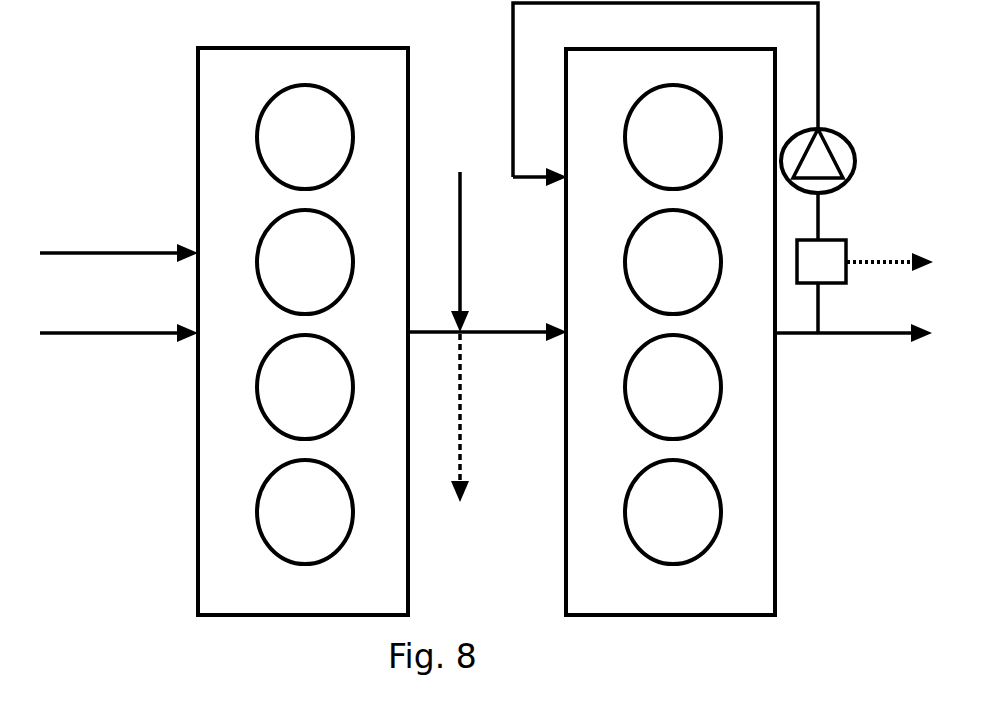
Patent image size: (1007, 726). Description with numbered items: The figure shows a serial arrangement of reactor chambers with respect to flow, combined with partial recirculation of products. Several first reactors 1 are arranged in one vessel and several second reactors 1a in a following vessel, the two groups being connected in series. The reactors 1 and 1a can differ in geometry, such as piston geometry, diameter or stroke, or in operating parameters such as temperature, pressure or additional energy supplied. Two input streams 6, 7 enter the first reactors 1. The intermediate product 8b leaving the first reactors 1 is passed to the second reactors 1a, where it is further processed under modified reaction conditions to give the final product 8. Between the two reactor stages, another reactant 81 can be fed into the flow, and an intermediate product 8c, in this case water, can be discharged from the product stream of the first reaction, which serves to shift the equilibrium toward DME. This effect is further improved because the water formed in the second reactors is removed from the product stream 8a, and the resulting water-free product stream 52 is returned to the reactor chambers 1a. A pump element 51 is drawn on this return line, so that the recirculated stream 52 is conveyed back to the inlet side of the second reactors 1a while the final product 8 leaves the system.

The reactor 1 is at (305, 324).
The reactor 1a is at (673, 324).
The first feed stream 6 is at (119, 235).
The second feed stream 7 is at (119, 315).
The final product 8 is at (853, 313).
The product stream 8a is at (872, 249).
The intermediate product 8b is at (487, 314).
The intermediate product 8c is at (464, 436).
The reactant 81 is at (448, 222).
The recirculation pump 51 is at (847, 161).
The water-free product stream 52 is at (696, 168).